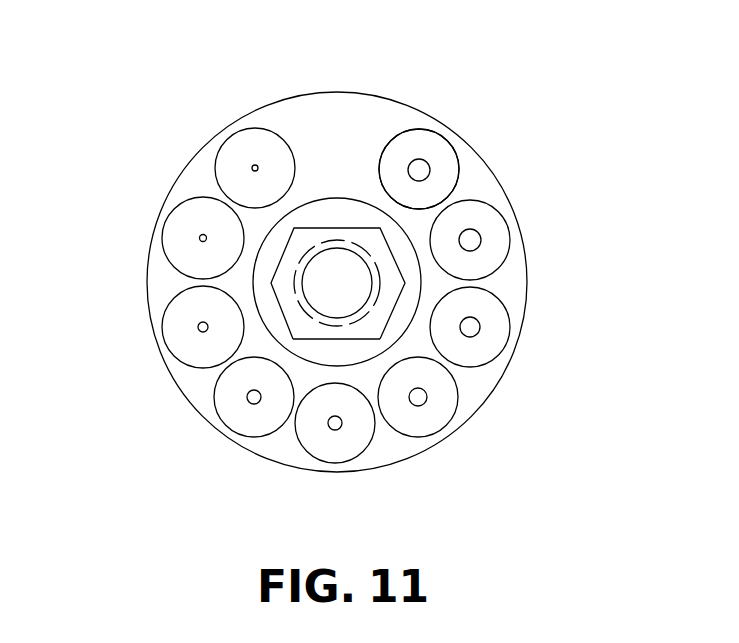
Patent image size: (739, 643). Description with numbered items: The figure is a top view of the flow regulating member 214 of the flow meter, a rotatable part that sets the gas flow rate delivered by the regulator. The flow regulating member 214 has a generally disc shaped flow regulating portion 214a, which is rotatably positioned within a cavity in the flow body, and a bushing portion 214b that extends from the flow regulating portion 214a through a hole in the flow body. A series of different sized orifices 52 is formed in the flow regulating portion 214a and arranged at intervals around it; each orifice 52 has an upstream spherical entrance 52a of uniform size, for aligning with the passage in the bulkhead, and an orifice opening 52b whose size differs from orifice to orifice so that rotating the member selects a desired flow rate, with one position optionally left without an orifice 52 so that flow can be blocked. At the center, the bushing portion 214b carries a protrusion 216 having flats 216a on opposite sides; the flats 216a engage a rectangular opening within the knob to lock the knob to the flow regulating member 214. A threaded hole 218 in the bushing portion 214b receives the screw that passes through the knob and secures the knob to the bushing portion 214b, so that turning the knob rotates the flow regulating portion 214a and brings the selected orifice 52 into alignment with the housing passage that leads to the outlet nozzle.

The flow regulating member 214 is at (494, 86).
The flow regulating portion 214a is at (248, 112).
The bushing portion 214b is at (318, 200).
The protrusion 216 is at (287, 273).
The flats 216a is at (320, 339).
The threaded hole 218 is at (331, 252).
The orifices 52 is at (435, 152).
The spherical entrances 52a is at (395, 143).
The orifice openings 52b is at (432, 172).